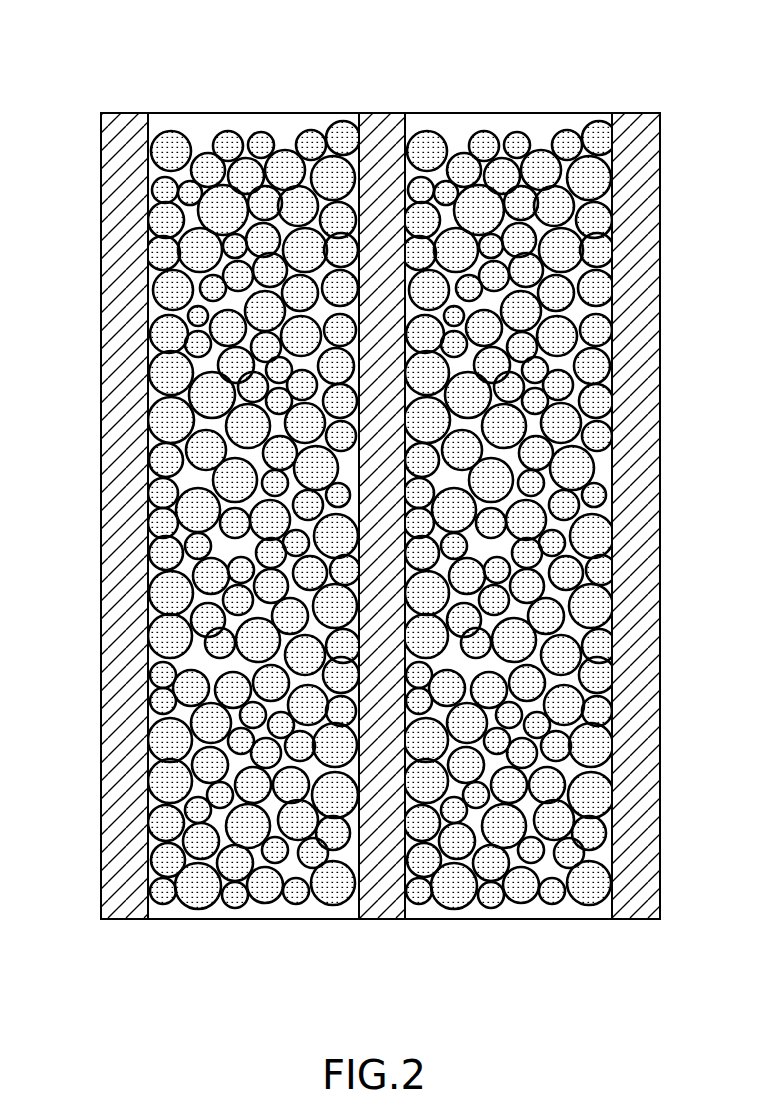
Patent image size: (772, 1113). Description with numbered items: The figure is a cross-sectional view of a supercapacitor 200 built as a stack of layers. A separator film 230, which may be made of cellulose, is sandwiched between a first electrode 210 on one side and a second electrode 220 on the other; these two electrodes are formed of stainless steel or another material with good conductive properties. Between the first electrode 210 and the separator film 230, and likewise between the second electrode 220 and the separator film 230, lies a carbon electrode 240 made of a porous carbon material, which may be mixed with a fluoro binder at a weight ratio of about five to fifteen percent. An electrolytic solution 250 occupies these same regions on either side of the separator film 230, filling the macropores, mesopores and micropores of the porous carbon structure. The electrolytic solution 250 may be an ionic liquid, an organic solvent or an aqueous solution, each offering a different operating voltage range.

The supercapacitor 200 is at (640, 77).
The first electrode 210 is at (100, 181).
The second electrode 220 is at (633, 183).
The separator film 230 is at (383, 914).
The carbon electrode 240 is at (165, 324).
The electrolytic solution 250 is at (603, 472).